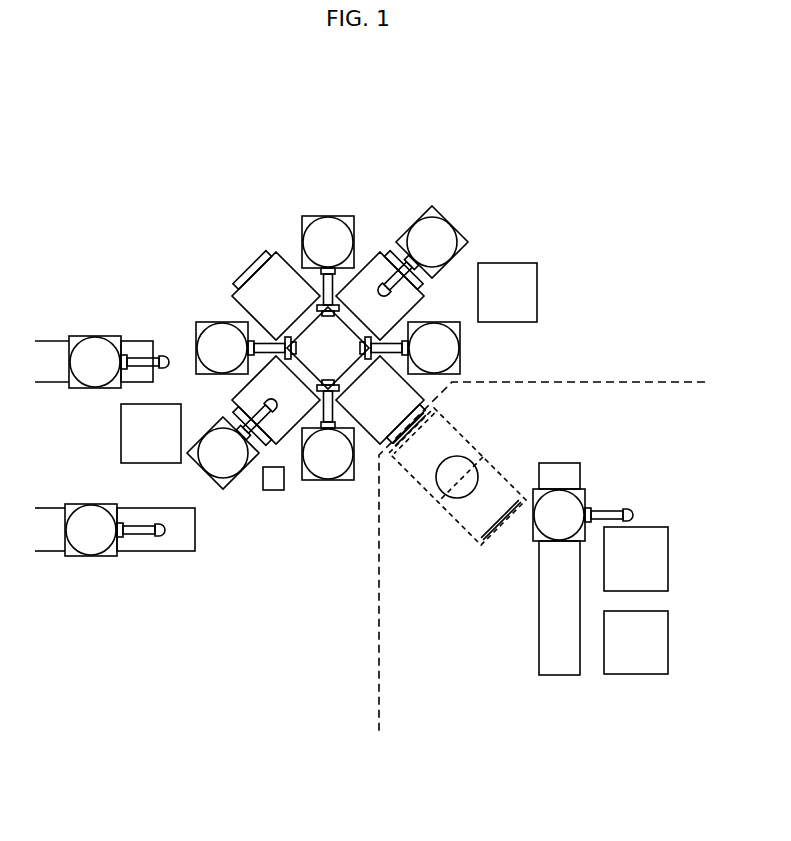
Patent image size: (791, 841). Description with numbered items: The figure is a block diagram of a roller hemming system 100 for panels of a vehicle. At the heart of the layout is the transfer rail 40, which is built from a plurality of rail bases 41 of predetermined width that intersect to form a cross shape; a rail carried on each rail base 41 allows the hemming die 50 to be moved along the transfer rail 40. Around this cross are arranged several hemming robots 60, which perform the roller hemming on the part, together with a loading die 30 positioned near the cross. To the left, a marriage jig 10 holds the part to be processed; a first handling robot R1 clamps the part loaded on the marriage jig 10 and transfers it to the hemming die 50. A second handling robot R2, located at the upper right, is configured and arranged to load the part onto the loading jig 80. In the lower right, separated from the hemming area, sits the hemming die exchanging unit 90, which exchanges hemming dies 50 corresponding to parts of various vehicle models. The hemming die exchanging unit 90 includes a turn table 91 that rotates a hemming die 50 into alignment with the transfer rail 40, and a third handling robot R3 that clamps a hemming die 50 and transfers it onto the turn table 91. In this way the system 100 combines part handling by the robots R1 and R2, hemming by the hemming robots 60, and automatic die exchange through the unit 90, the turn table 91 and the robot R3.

The roller hemming system 100 is at (195, 181).
The marriage jig 10 is at (121, 433).
The loading die 30 is at (274, 490).
The transfer rail 40 is at (380, 240).
The rail base 41 is at (317, 345).
The hemming die 50 is at (290, 449).
The hemming robot 60 is at (328, 233).
The loading jig 80 is at (538, 292).
The hemming die exchanging unit 90 is at (510, 557).
The turn table 91 is at (458, 462).
The first handling robot R1 is at (226, 490).
The second handling robot R2 is at (441, 237).
The third handling robot R3 is at (556, 497).